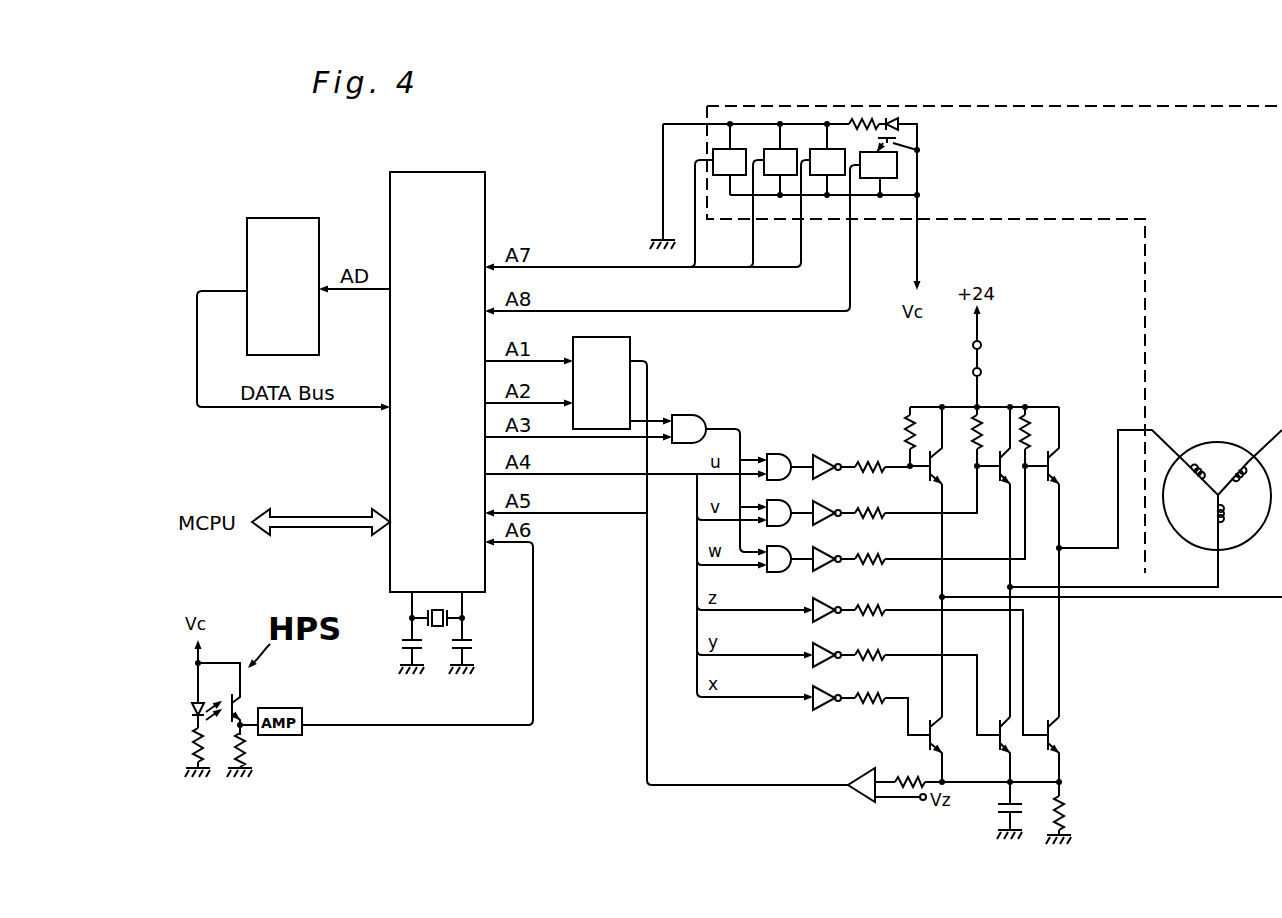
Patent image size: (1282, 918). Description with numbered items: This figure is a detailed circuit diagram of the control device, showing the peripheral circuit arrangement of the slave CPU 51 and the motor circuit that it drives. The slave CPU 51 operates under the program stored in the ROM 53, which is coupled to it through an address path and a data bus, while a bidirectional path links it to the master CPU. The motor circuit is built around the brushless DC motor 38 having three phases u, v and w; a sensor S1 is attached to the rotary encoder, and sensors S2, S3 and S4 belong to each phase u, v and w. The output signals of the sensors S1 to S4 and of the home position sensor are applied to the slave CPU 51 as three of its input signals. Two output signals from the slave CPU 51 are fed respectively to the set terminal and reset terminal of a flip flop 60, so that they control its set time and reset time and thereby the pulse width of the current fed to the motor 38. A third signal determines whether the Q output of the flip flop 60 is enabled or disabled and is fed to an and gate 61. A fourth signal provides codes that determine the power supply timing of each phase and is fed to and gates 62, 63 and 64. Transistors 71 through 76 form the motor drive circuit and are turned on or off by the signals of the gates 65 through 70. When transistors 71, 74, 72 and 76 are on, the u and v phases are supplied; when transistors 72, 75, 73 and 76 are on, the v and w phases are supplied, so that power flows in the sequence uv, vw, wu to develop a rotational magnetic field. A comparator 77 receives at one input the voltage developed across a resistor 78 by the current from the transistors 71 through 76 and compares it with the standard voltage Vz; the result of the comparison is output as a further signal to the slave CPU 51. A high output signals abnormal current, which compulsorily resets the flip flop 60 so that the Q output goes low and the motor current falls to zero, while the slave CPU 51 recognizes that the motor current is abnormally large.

The brushless DC motor 38 is at (1225, 443).
The slave CPU 51 is at (485, 172).
The ROM 53 is at (320, 218).
The flip flop 60 is at (632, 337).
The and gate 61 is at (705, 416).
The and gate 62 is at (778, 454).
The and gate 63 is at (768, 501).
The and gate 64 is at (776, 572).
The gate 65 is at (827, 455).
The gate 66 is at (830, 502).
The gate 67 is at (830, 548).
The gate 68 is at (836, 603).
The gate 69 is at (836, 647).
The gate 70 is at (836, 690).
The transistor 71 is at (947, 468).
The transistor 72 is at (998, 457).
The transistor 73 is at (1053, 460).
The transistor 74 is at (944, 742).
The transistor 75 is at (1012, 742).
The transistor 76 is at (1061, 740).
The comparator 77 is at (866, 776).
The resistor 78 is at (1068, 816).
The sensor S1 is at (898, 119).
The sensor S2 is at (840, 135).
The sensor S3 is at (797, 135).
The sensor S4 is at (745, 133).